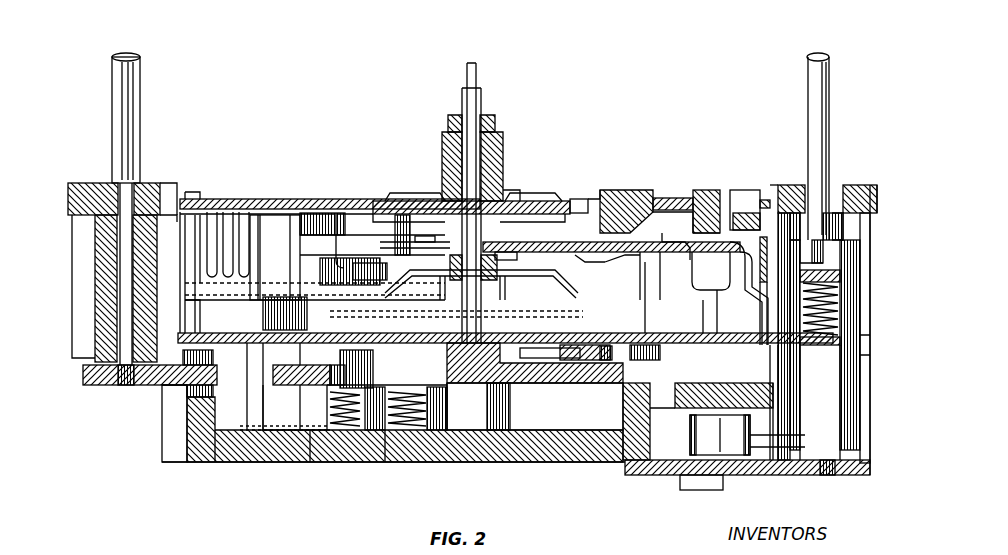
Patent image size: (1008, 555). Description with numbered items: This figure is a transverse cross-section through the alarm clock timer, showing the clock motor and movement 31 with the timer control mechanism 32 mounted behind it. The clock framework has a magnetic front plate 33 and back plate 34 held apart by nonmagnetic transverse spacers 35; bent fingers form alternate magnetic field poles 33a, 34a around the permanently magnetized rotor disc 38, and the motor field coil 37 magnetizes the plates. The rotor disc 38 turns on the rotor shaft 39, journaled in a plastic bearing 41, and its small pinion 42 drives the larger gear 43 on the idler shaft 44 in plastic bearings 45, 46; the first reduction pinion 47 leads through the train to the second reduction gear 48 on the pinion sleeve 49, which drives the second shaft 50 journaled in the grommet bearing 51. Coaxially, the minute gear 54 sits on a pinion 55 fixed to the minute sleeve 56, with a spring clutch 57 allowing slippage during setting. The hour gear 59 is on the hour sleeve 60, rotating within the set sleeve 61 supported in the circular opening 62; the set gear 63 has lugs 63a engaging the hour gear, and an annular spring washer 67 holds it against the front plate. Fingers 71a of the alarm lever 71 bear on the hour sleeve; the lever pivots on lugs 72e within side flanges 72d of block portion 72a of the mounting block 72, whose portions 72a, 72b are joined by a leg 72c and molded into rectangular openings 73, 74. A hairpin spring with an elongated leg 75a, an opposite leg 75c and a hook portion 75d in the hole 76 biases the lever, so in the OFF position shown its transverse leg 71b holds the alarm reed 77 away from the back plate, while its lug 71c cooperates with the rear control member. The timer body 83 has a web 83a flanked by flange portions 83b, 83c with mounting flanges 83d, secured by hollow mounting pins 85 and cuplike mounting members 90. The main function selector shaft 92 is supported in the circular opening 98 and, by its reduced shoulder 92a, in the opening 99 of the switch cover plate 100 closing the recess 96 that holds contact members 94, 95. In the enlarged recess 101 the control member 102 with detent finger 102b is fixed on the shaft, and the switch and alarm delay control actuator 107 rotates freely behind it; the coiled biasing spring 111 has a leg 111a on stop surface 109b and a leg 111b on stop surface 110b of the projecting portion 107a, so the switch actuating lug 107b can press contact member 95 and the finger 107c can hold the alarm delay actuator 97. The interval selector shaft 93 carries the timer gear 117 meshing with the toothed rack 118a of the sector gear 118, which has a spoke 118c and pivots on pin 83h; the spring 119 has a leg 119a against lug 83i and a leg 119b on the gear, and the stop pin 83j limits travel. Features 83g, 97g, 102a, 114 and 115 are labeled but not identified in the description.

The clock motor and movement 31 is at (337, 235).
The timer control mechanism 32 is at (525, 463).
The front plate 33 is at (285, 205).
The magnetic field poles 33a is at (244, 212).
The back plate 34 is at (180, 338).
The magnetic field poles 34a is at (315, 283).
The transverse spacers 35 is at (185, 235).
The motor field coil 37 is at (711, 421).
The rotor disc 38 is at (262, 298).
The rotor shaft 39 is at (312, 228).
The plastic bearing 41 is at (280, 375).
The small pinion 42 is at (340, 215).
The larger gear 43 is at (195, 300).
The idler shaft 44 is at (282, 238).
The plastic bearing 45 is at (265, 215).
The plastic bearing 46 is at (300, 350).
The first reduction pinion 47 is at (268, 345).
The second reduction gear 48 is at (600, 332).
The pinion sleeve 49 is at (490, 298).
The second shaft 50 is at (478, 68).
The grommet bearing 51 is at (447, 358).
The minute gear 54 is at (487, 287).
The pinion 55 is at (518, 258).
The minute sleeve 56 is at (481, 95).
The spring clutch 57 is at (530, 292).
The hour gear 59 is at (568, 205).
The hour sleeve 60 is at (495, 118).
The set sleeve 61 is at (503, 142).
The circular opening 62 is at (500, 190).
The set gear 63 is at (385, 205).
The lugs 63a is at (400, 195).
The annular spring washer 67 is at (395, 197).
The alarm lever 71 is at (645, 262).
The fingers 71a is at (450, 235).
The transverse leg portion 71b is at (680, 270).
The lug 71c is at (735, 300).
The mounting block 72 is at (710, 190).
The block portion 72a is at (610, 192).
The block portion 72b is at (702, 188).
The leg 72c is at (665, 200).
The side flanges 72d is at (625, 258).
The lugs 72e is at (580, 262).
The rectangular opening 73 is at (625, 188).
The rectangular opening 74 is at (738, 195).
The elongated leg 75a is at (670, 198).
The leg portion 75c is at (676, 236).
The hook portion 75d is at (690, 260).
The opening 76 is at (660, 250).
The alarm reed 77 is at (762, 235).
The body member 83 is at (200, 466).
The web portion 83a is at (560, 463).
The flange portion 83b is at (78, 255).
The flange portion 83c is at (860, 345).
The mounting flange 83d is at (70, 185).
The housing wall portion 83g is at (95, 290).
The pin 83h is at (385, 462).
The lug 83i is at (275, 462).
The stop pin 83j is at (310, 462).
The mounting pins 85 is at (560, 318).
The cuplike mounting member 90 is at (425, 236).
The main function selector shaft 92 is at (815, 56).
The reduced diameter shoulder 92a is at (828, 476).
The interval selector shaft 93 is at (130, 56).
The contact member 94 is at (690, 480).
The contact member 95 is at (742, 455).
The recess 96 is at (640, 462).
The alarm delay actuator 97 is at (612, 400).
The block recess 97g is at (556, 388).
The circular opening 98 is at (830, 200).
The opening 99 is at (805, 476).
The switch cover plate 100 is at (625, 476).
The enlarged recess 101 is at (866, 430).
The control member 102 is at (865, 240).
The cap portion 102a is at (800, 200).
The detent finger 102b is at (838, 210).
The switch and alarm delay control actuator 107 is at (865, 415).
The forwardly projecting portion 107a is at (810, 245).
The switch actuating lug 107b is at (775, 462).
The finger 107c is at (800, 370).
The stop surface 109b is at (835, 300).
The stop surface 110b is at (840, 322).
The coiled biasing spring 111 is at (845, 272).
The spring leg 111a is at (840, 285).
The spring leg 111b is at (838, 342).
The screw 114 is at (600, 365).
The washer 115 is at (520, 368).
The timer gear 117 is at (83, 377).
The sector gear 118 is at (283, 392).
The toothed rack portion 118a is at (185, 393).
The spoke 118c is at (310, 385).
The spring 119 is at (425, 462).
The spring leg 119a is at (245, 463).
The spring leg 119b is at (447, 405).